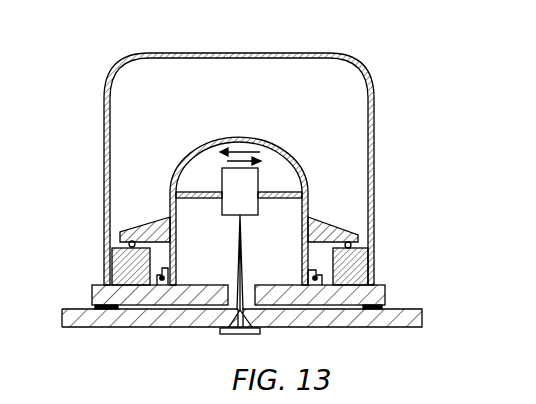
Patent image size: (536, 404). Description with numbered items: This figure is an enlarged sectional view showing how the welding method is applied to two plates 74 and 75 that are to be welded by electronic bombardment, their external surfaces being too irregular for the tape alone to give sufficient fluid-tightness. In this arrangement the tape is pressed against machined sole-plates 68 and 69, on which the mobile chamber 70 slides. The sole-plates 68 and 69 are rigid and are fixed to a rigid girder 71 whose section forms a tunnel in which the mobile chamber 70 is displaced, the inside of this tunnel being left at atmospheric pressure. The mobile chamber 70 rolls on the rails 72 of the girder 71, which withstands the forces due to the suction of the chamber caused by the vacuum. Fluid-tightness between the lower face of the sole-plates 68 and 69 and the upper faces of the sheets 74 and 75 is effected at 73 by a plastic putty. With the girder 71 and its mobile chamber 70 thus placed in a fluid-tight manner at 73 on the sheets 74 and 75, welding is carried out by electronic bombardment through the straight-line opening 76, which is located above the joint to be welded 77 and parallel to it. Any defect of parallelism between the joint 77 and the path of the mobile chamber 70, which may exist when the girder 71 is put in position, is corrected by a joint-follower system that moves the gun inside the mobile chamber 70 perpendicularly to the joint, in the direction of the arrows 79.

The machined sole-plate 68 is at (320, 284).
The machined sole-plate 69 is at (125, 290).
The mobile chamber 70 is at (308, 188).
The rigid girder 71 is at (173, 53).
The rails 72 is at (365, 262).
The fluid-tight seal 73 is at (105, 309).
The plate 74 is at (132, 318).
The plate 75 is at (310, 322).
The straight-line opening 76 is at (267, 240).
The joint to be welded 77 is at (235, 334).
The arrows 79 is at (237, 153).